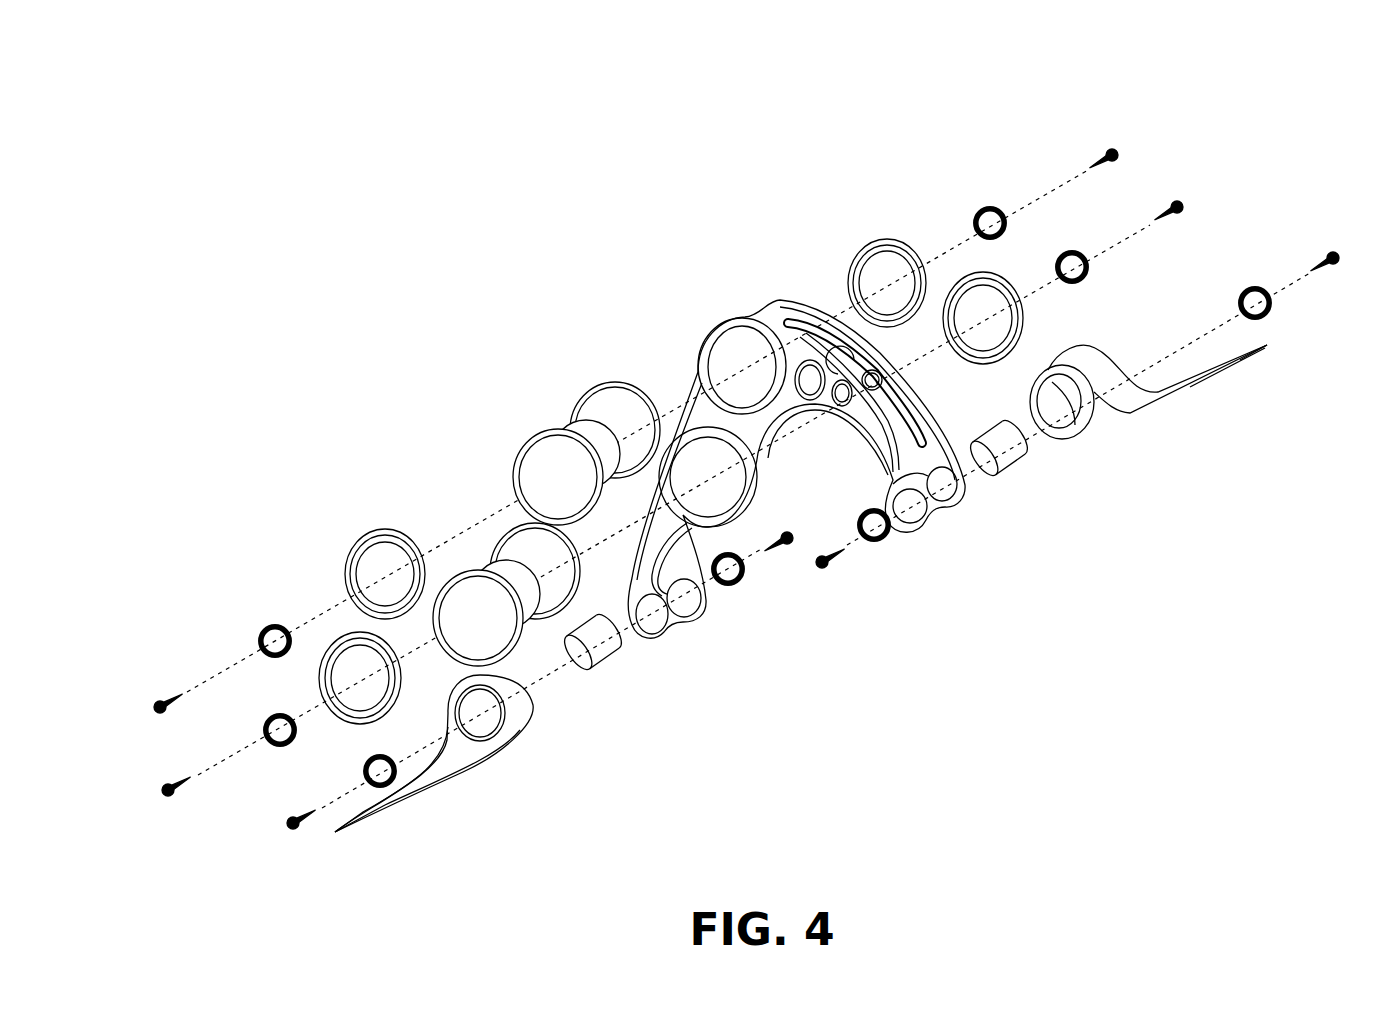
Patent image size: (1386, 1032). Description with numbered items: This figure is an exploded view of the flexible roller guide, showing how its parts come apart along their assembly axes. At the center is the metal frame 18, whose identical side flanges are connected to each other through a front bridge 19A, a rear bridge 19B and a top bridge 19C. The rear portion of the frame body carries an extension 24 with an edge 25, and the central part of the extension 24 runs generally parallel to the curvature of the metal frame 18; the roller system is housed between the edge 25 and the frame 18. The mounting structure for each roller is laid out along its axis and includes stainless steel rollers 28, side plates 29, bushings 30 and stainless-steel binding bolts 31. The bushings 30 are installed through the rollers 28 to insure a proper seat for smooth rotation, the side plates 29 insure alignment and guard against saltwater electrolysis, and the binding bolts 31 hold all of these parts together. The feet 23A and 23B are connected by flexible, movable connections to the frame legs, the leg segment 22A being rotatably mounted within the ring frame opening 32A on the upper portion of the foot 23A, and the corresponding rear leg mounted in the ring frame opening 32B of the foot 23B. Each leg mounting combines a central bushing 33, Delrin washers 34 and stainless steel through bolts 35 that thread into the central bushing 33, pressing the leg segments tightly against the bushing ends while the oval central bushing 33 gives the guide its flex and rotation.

The metal frame 18 is at (847, 475).
The front bridge 19A is at (932, 453).
The rear bridge 19B is at (708, 597).
The top bridge 19C is at (767, 303).
The leg segment 22A is at (933, 427).
The foot 23A is at (1217, 380).
The foot 23B is at (403, 800).
The extension 24 is at (740, 435).
The edge 25 is at (800, 413).
The stainless steel rollers 28 is at (523, 437).
The side plates 29 is at (860, 244).
The bushings 30 is at (977, 205).
The stainless-steel binding bolts 31 is at (1087, 167).
The ring frame opening 32A is at (1105, 417).
The ring frame opening 32B is at (523, 730).
The central bushing 33 is at (1010, 447).
The Delrin washers 34 is at (747, 575).
The stainless steel through bolts 35 is at (772, 547).